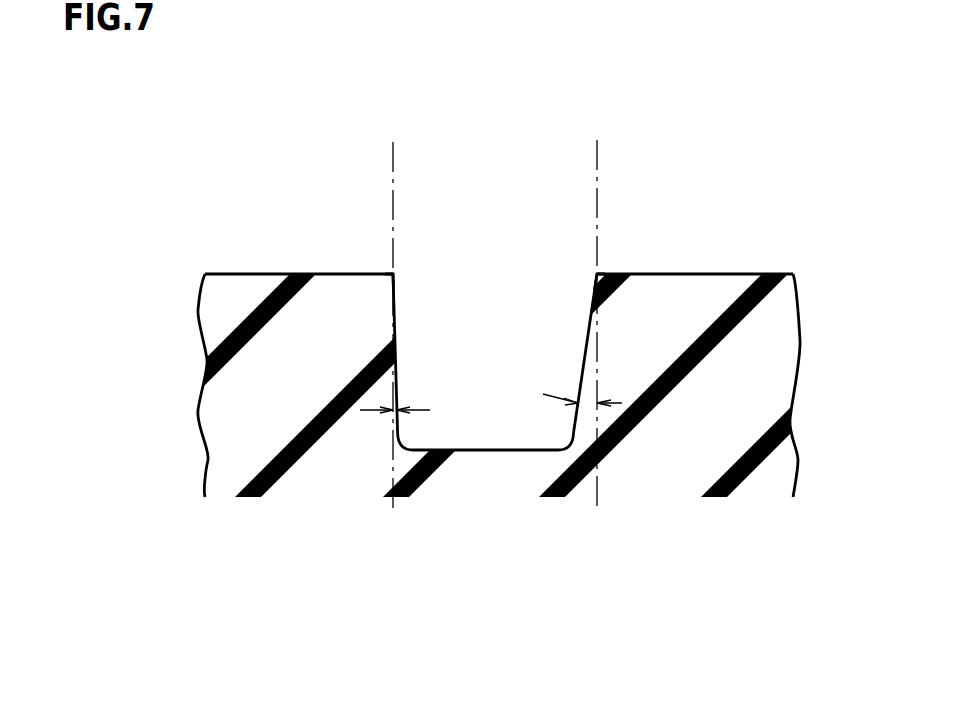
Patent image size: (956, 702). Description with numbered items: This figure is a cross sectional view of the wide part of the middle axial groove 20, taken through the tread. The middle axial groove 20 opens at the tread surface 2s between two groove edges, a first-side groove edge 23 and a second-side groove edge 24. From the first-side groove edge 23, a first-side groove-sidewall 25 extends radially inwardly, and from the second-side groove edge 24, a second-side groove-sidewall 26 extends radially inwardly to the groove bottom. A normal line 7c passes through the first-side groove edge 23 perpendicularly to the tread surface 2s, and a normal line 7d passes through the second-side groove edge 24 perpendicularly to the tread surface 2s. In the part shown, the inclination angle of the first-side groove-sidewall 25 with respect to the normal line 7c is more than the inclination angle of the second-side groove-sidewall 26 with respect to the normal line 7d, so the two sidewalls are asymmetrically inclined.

The tread surface 2s is at (317, 274).
The normal line 7d is at (393, 167).
The normal line 7c is at (597, 167).
The second-side groove edge 24 is at (393, 274).
The first-side groove edge 23 is at (597, 274).
The second-side groove-sidewall 26 is at (397, 367).
The first-side groove-sidewall 25 is at (583, 357).
The middle axial groove 20 is at (483, 383).